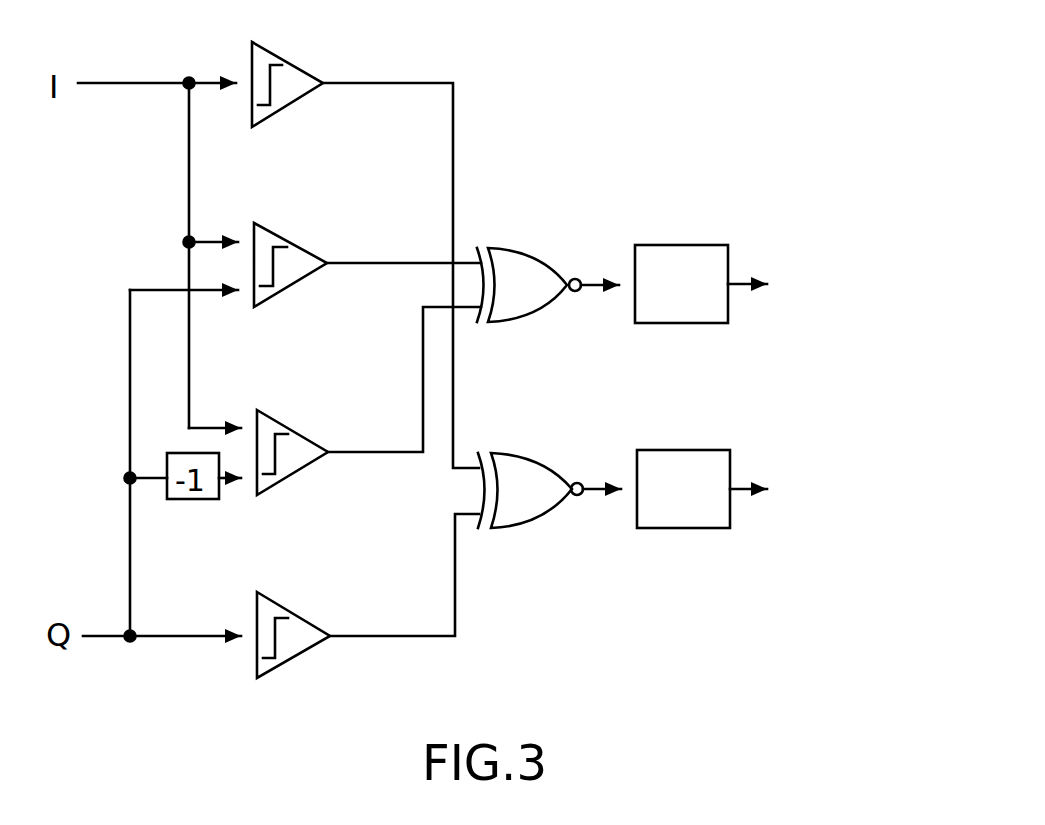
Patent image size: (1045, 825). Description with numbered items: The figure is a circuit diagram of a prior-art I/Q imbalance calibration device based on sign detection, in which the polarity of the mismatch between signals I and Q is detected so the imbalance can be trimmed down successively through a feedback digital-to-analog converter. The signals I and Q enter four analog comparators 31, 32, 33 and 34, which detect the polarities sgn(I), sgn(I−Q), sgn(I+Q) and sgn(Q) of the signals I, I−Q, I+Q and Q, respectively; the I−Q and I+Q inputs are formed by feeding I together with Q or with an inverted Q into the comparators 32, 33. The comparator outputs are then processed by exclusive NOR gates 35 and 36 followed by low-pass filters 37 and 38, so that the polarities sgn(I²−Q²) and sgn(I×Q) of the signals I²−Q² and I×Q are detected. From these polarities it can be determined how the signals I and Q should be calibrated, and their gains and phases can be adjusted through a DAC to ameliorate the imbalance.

The analog comparator 31 is at (287, 88).
The analog comparator 32 is at (290, 272).
The analog comparator 33 is at (297, 450).
The analog comparator 34 is at (298, 633).
The exclusive NOR gate 35 is at (522, 295).
The exclusive NOR gate 36 is at (523, 500).
The low-pass filter 37 is at (700, 257).
The low-pass filter 38 is at (700, 463).